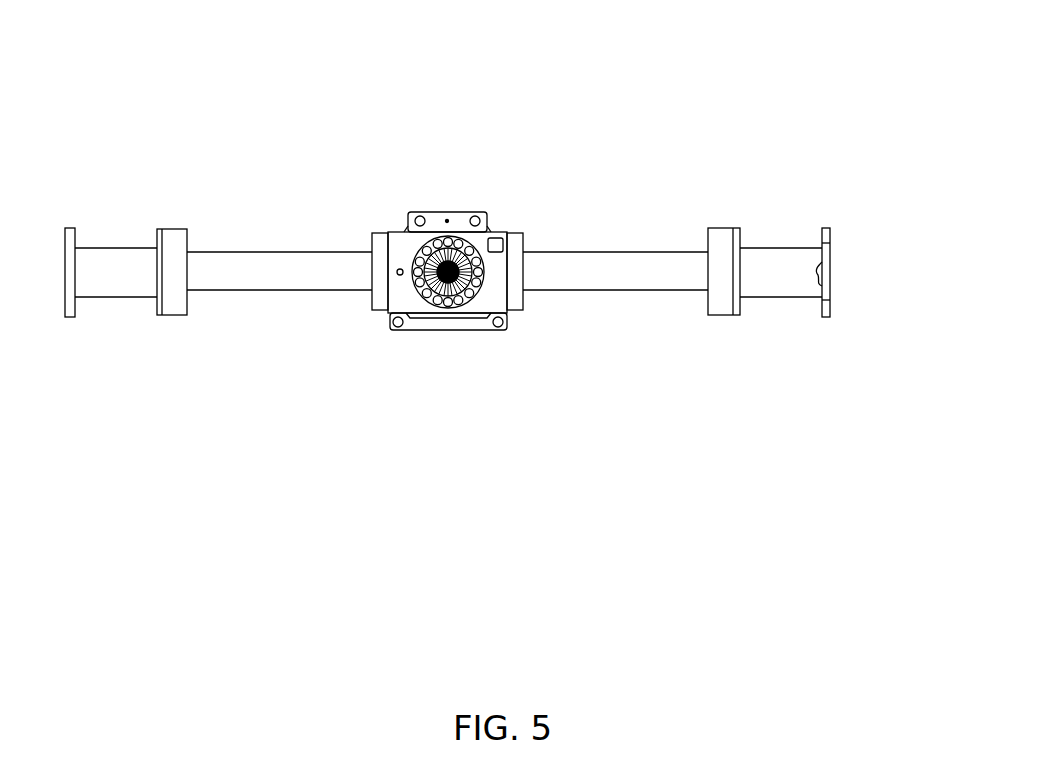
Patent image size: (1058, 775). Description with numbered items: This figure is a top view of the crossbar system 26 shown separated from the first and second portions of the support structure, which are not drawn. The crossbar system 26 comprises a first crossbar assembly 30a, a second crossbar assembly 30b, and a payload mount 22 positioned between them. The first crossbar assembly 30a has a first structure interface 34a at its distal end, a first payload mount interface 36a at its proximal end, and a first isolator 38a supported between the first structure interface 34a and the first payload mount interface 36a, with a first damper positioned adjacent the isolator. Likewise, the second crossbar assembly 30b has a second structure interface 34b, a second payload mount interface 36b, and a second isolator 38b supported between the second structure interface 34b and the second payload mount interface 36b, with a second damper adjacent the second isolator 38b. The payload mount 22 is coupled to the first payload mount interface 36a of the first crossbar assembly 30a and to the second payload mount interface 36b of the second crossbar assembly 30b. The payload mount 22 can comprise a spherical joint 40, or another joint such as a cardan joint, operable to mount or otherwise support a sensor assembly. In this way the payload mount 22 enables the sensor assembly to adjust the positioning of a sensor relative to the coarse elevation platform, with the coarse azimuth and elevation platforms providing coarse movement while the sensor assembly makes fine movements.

The payload mount 22 is at (415, 344).
The crossbar system 26 is at (477, 143).
The first crossbar assembly 30a is at (262, 374).
The second crossbar assembly 30b is at (720, 378).
The first structure interface 34a is at (67, 257).
The second structure interface 34b is at (830, 277).
The first payload mount interface 36a is at (372, 233).
The second payload mount interface 36b is at (523, 240).
The first isolator 38a is at (206, 218).
The second isolator 38b is at (705, 212).
The spherical joint 40 is at (460, 248).